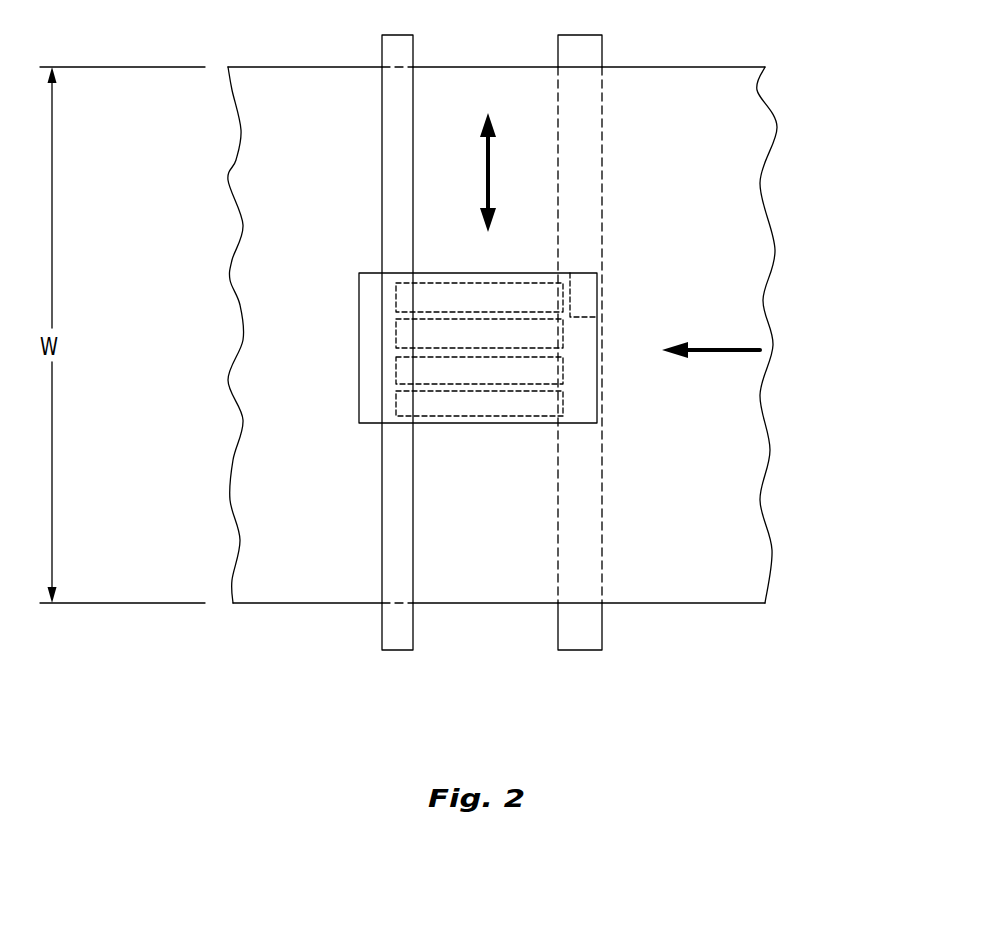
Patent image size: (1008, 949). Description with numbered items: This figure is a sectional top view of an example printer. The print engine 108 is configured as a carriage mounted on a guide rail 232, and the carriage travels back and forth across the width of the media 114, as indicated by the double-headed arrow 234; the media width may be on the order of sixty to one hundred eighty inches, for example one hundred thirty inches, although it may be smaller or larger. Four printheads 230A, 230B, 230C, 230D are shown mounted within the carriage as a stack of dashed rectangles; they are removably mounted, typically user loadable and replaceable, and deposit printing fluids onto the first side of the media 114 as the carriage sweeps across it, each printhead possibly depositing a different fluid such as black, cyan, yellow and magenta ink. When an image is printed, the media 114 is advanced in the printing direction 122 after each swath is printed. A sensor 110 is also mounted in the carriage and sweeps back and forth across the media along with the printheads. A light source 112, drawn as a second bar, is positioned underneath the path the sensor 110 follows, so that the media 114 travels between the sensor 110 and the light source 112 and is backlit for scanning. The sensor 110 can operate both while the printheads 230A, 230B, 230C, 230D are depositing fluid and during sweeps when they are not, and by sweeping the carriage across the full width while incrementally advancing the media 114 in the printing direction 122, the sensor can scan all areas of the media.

The print engine 108 is at (358, 284).
The sensor 110 is at (583, 297).
The light source 112 is at (583, 633).
The media 114 is at (716, 158).
The printing direction 122 is at (711, 338).
The printhead 230A is at (397, 293).
The printhead 230B is at (397, 334).
The printhead 230C is at (397, 369).
The printhead 230D is at (397, 405).
The guide rail 232 is at (402, 633).
The arrow 234 is at (486, 178).